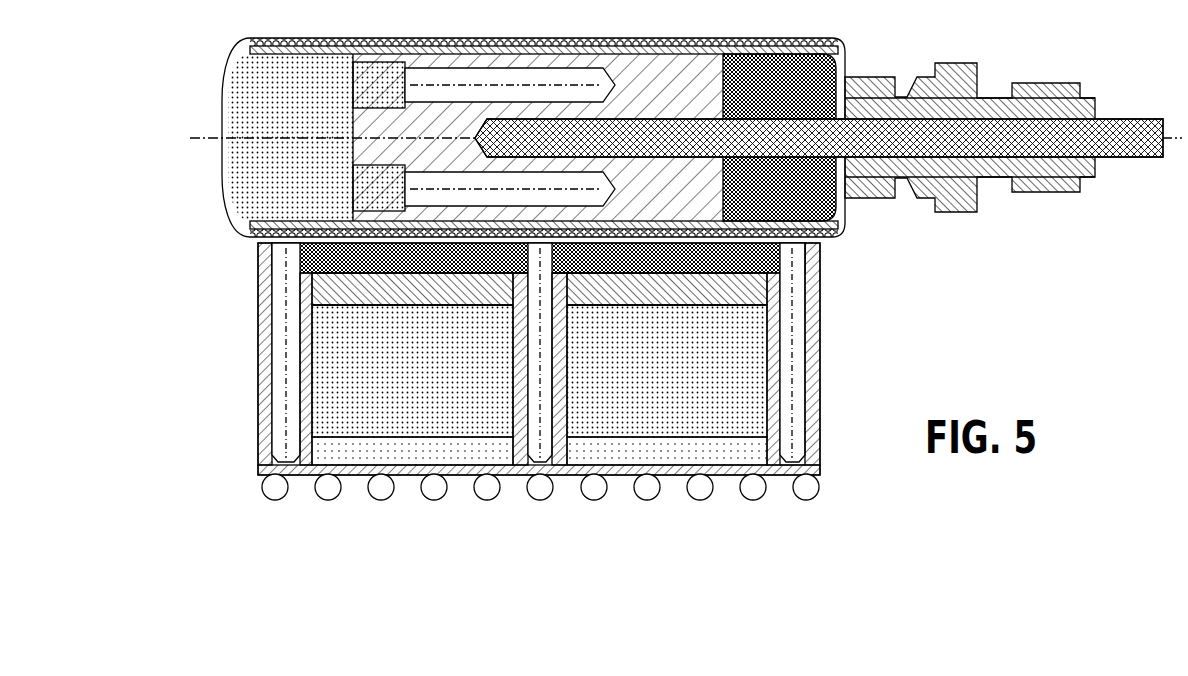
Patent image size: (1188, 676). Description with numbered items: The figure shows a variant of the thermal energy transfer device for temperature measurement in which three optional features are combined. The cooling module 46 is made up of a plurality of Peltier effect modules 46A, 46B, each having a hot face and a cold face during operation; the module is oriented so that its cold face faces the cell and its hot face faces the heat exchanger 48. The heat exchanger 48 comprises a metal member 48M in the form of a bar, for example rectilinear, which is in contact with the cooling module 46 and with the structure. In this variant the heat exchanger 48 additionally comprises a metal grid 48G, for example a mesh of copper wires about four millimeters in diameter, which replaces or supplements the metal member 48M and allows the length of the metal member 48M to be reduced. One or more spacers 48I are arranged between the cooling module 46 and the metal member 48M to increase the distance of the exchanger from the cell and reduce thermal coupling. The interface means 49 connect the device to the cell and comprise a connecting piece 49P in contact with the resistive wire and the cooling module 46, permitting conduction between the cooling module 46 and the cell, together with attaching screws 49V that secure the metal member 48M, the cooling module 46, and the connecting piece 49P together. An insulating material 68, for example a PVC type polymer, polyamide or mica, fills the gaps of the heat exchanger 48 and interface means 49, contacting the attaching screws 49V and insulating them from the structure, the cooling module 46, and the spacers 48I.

The interface means 49 is at (775, 251).
The connecting piece 49P is at (315, 262).
The attaching screws 49V is at (787, 477).
The cooling module 46 is at (730, 290).
The Peltier effect module 46A is at (775, 283).
The Peltier effect module 46B is at (315, 290).
The heat exchanger 48 is at (713, 455).
The metal grid 48G is at (272, 497).
The spacers 48I is at (428, 400).
The metal member 48M is at (364, 455).
The insulating material 68 is at (305, 395).